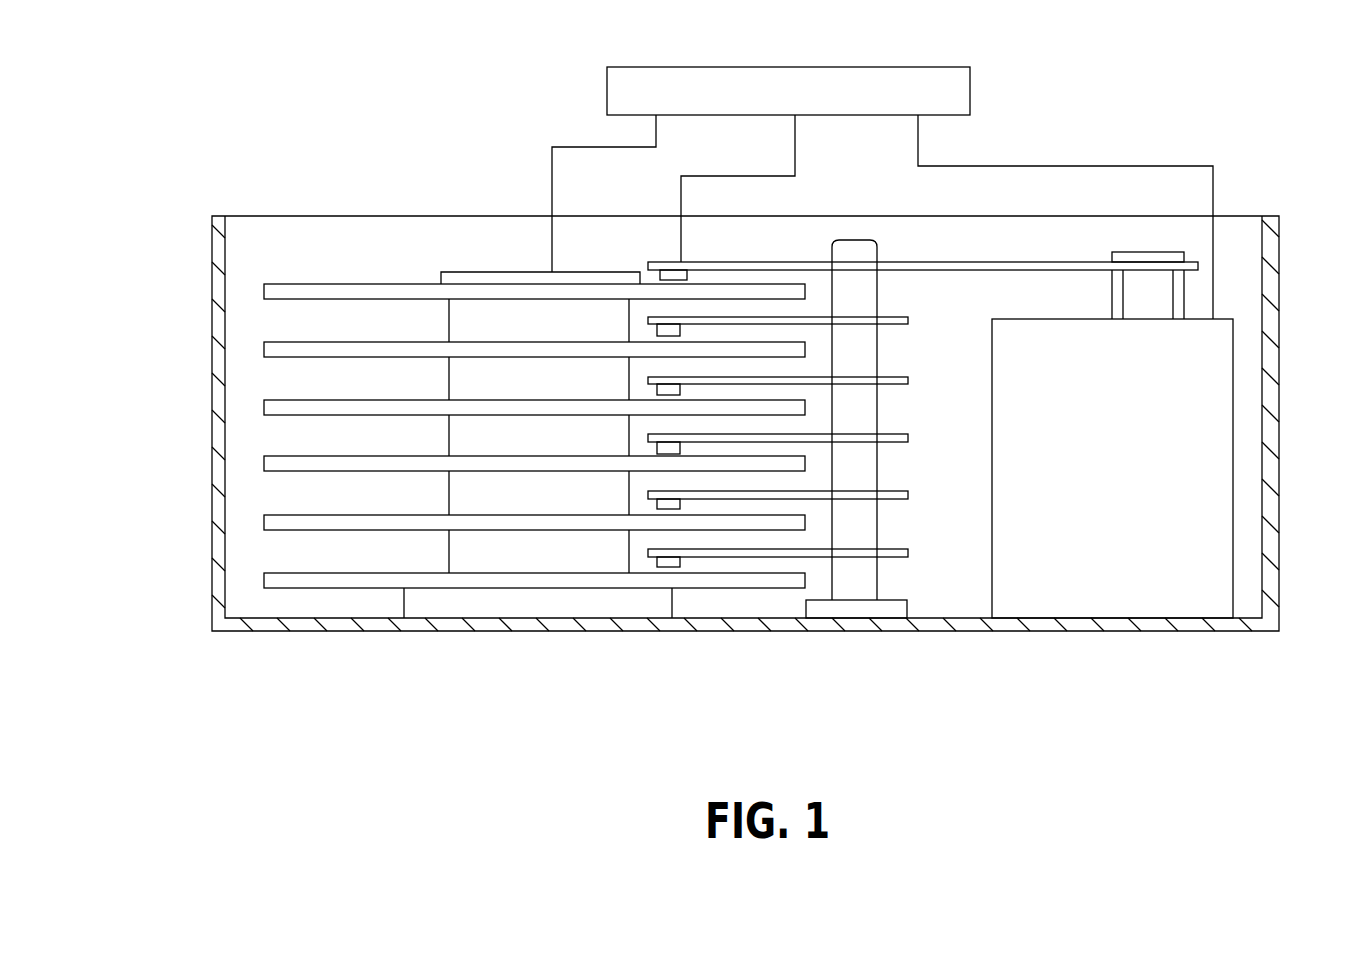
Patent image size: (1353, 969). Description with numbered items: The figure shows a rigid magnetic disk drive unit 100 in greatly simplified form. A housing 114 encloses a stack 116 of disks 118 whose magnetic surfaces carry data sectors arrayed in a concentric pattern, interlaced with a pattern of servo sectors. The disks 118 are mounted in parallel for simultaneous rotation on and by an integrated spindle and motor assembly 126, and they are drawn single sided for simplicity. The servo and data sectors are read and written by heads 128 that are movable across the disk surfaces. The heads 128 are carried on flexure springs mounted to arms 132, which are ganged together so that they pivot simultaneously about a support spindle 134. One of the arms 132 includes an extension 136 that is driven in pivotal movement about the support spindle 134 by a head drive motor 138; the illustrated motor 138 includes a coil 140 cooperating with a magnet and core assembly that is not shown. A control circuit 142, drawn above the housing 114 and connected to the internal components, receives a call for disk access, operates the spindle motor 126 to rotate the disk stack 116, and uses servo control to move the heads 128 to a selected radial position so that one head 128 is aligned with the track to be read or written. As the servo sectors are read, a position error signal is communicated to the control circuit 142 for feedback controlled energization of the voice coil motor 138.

The rigid magnetic disk drive unit 100 is at (1270, 144).
The housing 114 is at (1237, 635).
The stack 116 is at (419, 248).
The disks 118 is at (308, 284).
The integrated spindle and motor assembly 126 is at (518, 553).
The heads 128 is at (668, 281).
The arms 132 is at (908, 321).
The support spindle 134 is at (866, 575).
The extension 136 is at (1036, 262).
The head drive motor 138 is at (1205, 458).
The coil 140 is at (1173, 305).
The control circuit 142 is at (970, 88).